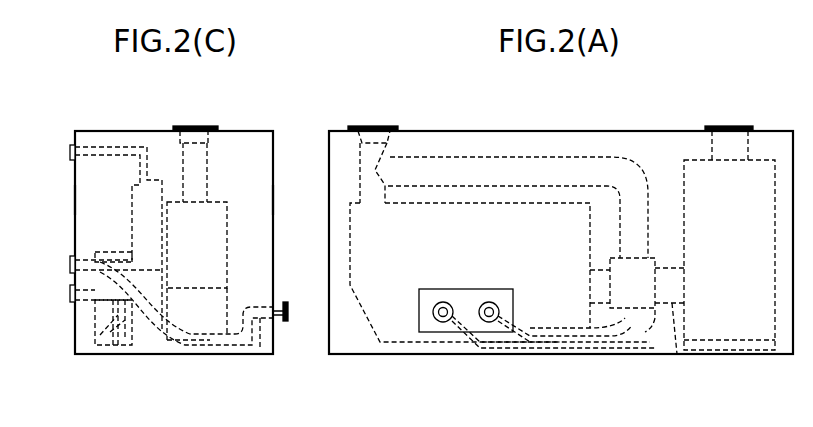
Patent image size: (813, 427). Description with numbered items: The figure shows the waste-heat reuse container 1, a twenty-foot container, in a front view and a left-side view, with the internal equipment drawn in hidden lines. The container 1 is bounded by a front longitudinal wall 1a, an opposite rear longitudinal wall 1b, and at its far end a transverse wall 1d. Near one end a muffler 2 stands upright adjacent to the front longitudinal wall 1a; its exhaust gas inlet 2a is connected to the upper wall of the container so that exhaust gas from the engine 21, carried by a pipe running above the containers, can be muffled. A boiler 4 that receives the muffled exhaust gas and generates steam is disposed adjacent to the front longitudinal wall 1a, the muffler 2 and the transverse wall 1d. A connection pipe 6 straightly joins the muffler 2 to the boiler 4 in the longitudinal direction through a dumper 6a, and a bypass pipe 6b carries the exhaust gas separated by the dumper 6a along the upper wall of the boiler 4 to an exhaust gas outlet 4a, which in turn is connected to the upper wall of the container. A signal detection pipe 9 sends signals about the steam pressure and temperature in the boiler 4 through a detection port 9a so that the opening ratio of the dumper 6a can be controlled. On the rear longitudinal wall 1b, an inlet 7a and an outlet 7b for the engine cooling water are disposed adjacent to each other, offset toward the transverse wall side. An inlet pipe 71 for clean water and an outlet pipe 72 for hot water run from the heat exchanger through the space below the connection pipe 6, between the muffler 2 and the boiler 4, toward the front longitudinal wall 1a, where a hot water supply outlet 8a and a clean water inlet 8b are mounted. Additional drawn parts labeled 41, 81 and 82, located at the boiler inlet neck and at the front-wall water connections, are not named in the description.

In FIG. 2C, the container 1 is at (246, 102).
In FIG. 2A, the container 1 is at (627, 102).
In FIG. 2C, the front longitudinal wall 1a is at (73, 199).
In FIG. 2C, the rear longitudinal wall 1b is at (281, 200).
In FIG. 2A, the rear longitudinal wall 1b is at (673, 162).
In FIG. 2C, the 0-f transverse wall 1d is at (257, 181).
In FIG. 2A, the muffler 2 is at (734, 341).
In FIG. 2A, the exhaust gas inlet 2a is at (728, 126).
In FIG. 2A, the engine 21 is at (741, 153).
In FIG. 2C, the boiler 4 is at (193, 247).
In FIG. 2A, the boiler 4 is at (432, 240).
In FIG. 2C, the exhaust gas outlet 4a is at (197, 126).
In FIG. 2A, the exhaust gas outlet 4a is at (366, 126).
In FIG. 2C, the inlet pipe 41 is at (212, 153).
In FIG. 2A, the inlet pipe 41 is at (362, 156).
In FIG. 2A, the connection pipe 6 is at (676, 356).
In FIG. 2A, the dumper 6a is at (644, 272).
In FIG. 2A, the bypass pipe 6b is at (512, 155).
In FIG. 2C, the inlet 7a is at (310, 347).
In FIG. 2A, the inlet 7a is at (498, 323).
In FIG. 2C, the outlet 7b is at (290, 322).
In FIG. 2A, the outlet 7b is at (436, 323).
In FIG. 2C, the inlet pipe 71 is at (163, 356).
In FIG. 2A, the inlet pipe 71 is at (571, 336).
In FIG. 2C, the outlet pipe 72 is at (112, 355).
In FIG. 2A, the outlet pipe 72 is at (490, 333).
In FIG. 2C, the hot water supply outlet 8a is at (70, 265).
In FIG. 2C, the clean water inlet 8b is at (70, 294).
In FIG. 2C, the pipe 81 is at (78, 251).
In FIG. 2C, the pipe 82 is at (78, 309).
In FIG. 2C, the signal detection pipe 9 is at (108, 147).
In FIG. 2C, the detection port 9a is at (70, 152).